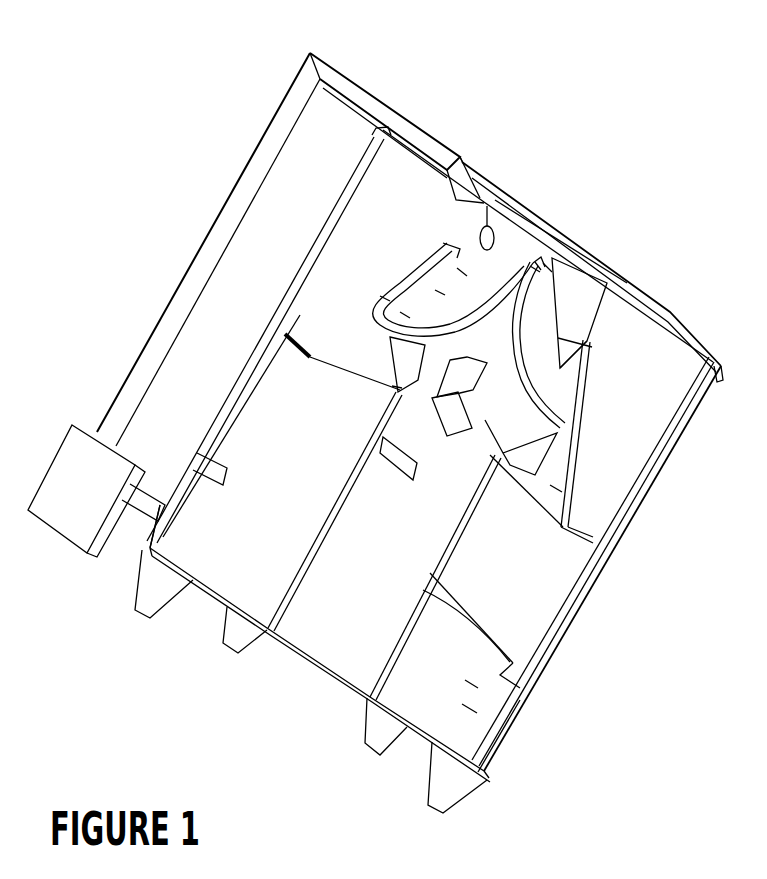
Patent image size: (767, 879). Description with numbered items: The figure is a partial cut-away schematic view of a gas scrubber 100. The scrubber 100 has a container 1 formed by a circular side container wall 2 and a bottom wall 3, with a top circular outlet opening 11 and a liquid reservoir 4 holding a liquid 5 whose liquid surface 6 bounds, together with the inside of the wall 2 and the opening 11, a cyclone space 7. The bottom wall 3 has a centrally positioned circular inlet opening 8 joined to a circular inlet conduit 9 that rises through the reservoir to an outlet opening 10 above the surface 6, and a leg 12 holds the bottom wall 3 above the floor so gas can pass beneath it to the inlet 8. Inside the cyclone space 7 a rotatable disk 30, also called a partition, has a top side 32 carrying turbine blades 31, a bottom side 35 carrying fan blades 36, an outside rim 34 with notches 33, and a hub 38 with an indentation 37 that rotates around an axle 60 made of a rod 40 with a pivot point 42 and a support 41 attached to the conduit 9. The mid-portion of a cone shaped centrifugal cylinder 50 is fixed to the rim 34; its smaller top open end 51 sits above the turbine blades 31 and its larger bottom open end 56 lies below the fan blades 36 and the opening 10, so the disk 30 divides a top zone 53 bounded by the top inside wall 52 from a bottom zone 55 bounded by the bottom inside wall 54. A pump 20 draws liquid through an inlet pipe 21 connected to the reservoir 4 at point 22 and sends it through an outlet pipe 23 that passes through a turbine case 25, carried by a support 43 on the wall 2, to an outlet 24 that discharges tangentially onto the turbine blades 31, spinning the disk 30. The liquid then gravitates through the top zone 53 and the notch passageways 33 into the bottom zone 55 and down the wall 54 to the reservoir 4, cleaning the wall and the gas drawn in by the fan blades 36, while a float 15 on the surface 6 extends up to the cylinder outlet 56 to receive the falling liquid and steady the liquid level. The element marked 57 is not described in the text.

The gas scrubber 100 is at (216, 112).
The container 1 is at (497, 771).
The side container wall 2 is at (505, 753).
The bottom wall 3 is at (437, 735).
The liquid reservoir 4 is at (470, 708).
The liquid 5 is at (472, 683).
The liquid surface 6 is at (468, 625).
The cyclone space 7 is at (607, 438).
The inlet opening 8 is at (295, 658).
The inlet conduit 9 is at (430, 576).
The outlet opening 10 is at (481, 452).
The top circular outlet opening 11 is at (535, 268).
The leg 12 is at (458, 785).
The float 15 is at (604, 564).
The pump 20 is at (40, 510).
The inlet pipe 21 is at (133, 515).
The point 22 is at (167, 530).
The outlet pipe 23 is at (405, 108).
The outlet 24 is at (486, 203).
The turbine case 25 is at (538, 262).
The rotatable disk 30 is at (373, 133).
The turbine blades 31 is at (462, 272).
The top side 32 is at (440, 292).
The notches 33 is at (405, 312).
The outside rim 34 is at (385, 298).
The bottom side 35 is at (388, 327).
The fan blades 36 is at (410, 363).
The indentation 37 is at (562, 242).
The hub 38 is at (523, 250).
The rod 40 is at (443, 418).
The support 41 is at (393, 450).
The pivot point 42 is at (547, 268).
The support 43 is at (623, 290).
The cone shaped centrifugal cylinder 50 is at (597, 330).
The top open end 51 is at (591, 370).
The top inside wall 52 is at (585, 348).
The top zone 53 is at (567, 400).
The bottom inside wall 54 is at (566, 467).
The bottom zone 55 is at (555, 489).
The bottom open end 56 is at (545, 520).
The strip 57 is at (300, 351).
The axle 60 is at (470, 390).